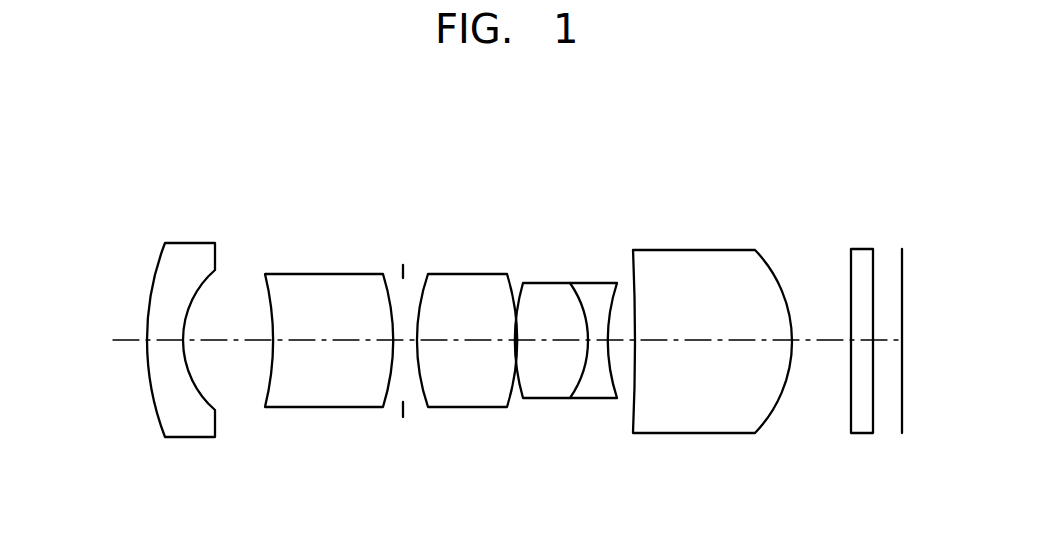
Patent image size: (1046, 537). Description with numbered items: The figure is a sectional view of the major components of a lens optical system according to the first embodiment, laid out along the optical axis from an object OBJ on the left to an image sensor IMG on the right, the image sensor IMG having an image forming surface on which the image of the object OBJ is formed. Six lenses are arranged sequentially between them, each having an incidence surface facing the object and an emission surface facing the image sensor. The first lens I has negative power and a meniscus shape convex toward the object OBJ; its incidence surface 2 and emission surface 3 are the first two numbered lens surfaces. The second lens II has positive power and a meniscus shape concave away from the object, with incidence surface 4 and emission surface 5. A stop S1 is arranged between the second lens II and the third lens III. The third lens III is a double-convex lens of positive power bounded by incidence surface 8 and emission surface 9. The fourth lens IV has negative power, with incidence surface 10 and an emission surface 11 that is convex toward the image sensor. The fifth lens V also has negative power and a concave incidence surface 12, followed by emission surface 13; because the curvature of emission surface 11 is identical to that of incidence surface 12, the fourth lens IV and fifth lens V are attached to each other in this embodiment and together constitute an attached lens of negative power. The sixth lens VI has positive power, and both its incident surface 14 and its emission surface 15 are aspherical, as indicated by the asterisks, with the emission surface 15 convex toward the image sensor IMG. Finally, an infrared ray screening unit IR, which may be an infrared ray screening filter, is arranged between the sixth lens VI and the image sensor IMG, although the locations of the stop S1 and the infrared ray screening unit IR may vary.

The incidence surface of first lens 2 is at (196, 317).
The emission surface of first lens 3 is at (157, 270).
The incidence surface of second lens 4 is at (326, 309).
The emission surface of second lens 5 is at (268, 300).
The incidence surface of third lens 8 is at (467, 309).
The emission surface of third lens 9 is at (421, 288).
The incidence surface of fourth lens 10 is at (560, 289).
The emission surface of fourth lens 11 is at (560, 289).
The incidence surface of fifth lens 12 is at (583, 298).
The emission surface of fifth lens 13 is at (610, 297).
The incident surface of sixth lens 14 is at (710, 304).
The emission surface of sixth lens 15 is at (631, 300).
The first lens I is at (196, 342).
The second lens II is at (326, 350).
The third lens III is at (467, 350).
The fourth lens IV is at (560, 334).
The fifth lens V is at (593, 353).
The sixth lens VI is at (710, 332).
The stop S1 is at (403, 410).
The infrared ray screening unit IR is at (860, 433).
The image sensor IMG is at (903, 262).
The object OBJ is at (482, 340).